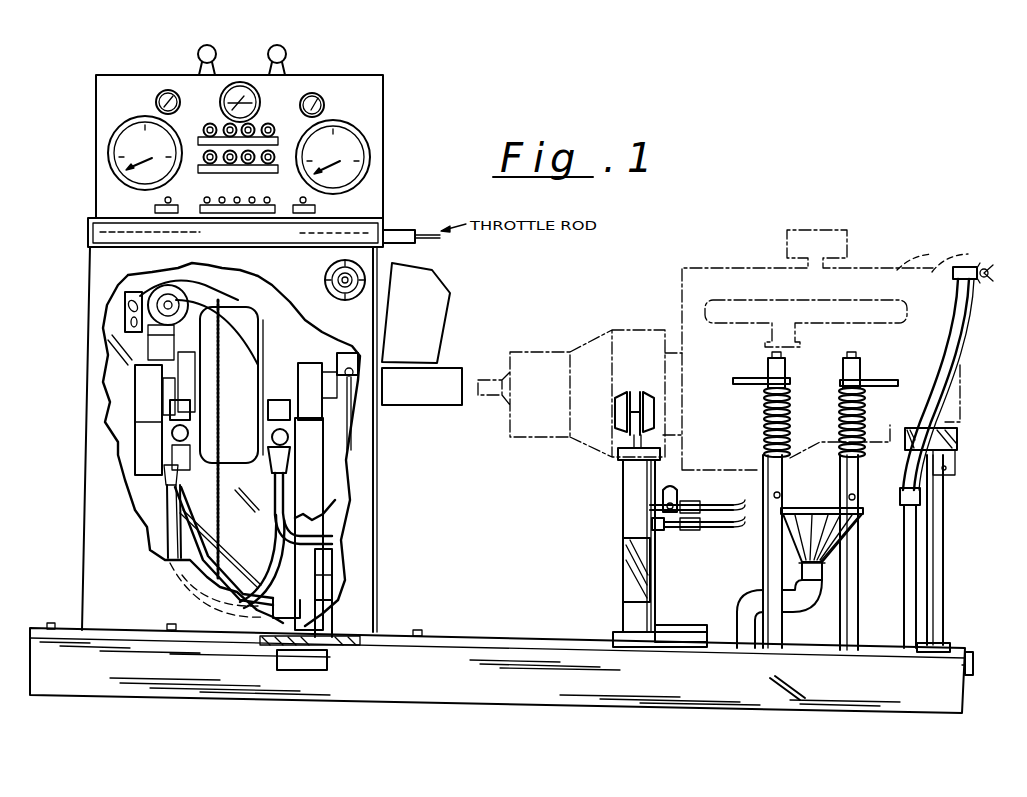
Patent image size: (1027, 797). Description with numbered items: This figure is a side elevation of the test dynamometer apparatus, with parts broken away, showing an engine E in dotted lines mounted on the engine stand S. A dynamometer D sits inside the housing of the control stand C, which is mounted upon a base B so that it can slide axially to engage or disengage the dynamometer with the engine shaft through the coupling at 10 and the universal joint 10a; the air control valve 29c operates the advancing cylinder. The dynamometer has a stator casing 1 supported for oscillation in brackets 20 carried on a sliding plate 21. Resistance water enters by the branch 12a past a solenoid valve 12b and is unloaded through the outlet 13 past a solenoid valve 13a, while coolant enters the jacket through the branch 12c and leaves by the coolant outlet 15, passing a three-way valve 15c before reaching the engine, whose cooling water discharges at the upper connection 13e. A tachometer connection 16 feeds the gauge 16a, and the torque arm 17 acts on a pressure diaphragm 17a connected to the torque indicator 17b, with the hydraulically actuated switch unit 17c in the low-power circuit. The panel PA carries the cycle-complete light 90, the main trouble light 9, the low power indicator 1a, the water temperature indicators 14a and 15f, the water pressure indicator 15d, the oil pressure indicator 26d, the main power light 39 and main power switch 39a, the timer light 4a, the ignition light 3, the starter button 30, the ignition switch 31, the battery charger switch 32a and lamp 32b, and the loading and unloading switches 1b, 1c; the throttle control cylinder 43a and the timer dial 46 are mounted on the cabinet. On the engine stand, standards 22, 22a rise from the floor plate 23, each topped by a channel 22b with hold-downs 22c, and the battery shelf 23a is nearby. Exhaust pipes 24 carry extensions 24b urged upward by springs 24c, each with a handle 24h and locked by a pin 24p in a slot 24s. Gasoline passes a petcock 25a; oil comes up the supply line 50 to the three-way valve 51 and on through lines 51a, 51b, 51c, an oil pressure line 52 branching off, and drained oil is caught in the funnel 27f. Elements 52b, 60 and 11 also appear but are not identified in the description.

The panel PA is at (100, 92).
The cycle-complete light 90 is at (203, 55).
The main trouble light 9 is at (285, 56).
The torque indicator 17b is at (108, 140).
The tachometer gauge 16a is at (370, 140).
The temperature indicator 15f is at (159, 96).
The water temperature indicator 14a is at (228, 124).
The gauge 52b is at (324, 104).
The low power indicator 1a is at (212, 124).
The water pressure indicator 15d is at (253, 125).
The oil pressure indicator 26d is at (274, 129).
The main power indicator light 39 is at (210, 160).
The timer light 4a is at (230, 163).
The ignition light 3 is at (248, 163).
The battery charger light 32b is at (270, 161).
The loading switch 1b is at (160, 203).
The unloading switch 1c is at (306, 203).
The main power switch 39a is at (207, 203).
The indicator light 60 is at (222, 203).
The starter button 30 is at (237, 203).
The ignition switch 31 is at (252, 203).
The battery charger switch 32a is at (267, 203).
The throttle control cylinder 43a is at (398, 229).
The dial 46 is at (326, 276).
The control valve 29c is at (388, 357).
The universal joint coupling 10a is at (403, 400).
The coupling 10 is at (353, 410).
The hydraulically actuated switch unit 17c is at (125, 297).
The pressure diaphragm 17a is at (177, 317).
The torque arm 17 is at (189, 308).
The stator casing 1 is at (220, 305).
The tachometer connection 16 is at (273, 313).
The dynamometer D is at (235, 393).
The brackets 20 is at (155, 466).
The solenoid controlled valve 12b is at (270, 410).
The solenoid controlled valve 13a is at (188, 433).
The branch 12a is at (334, 542).
The branch 12c is at (272, 551).
The outlet 13 is at (193, 551).
The coolant outlet 15 is at (168, 521).
The oil pressure line 52 is at (215, 518).
The plate 21 is at (350, 634).
The pipe fitting 11 is at (327, 665).
The control stand C is at (68, 383).
The base B is at (518, 700).
The channel 22b is at (615, 410).
The hold-downs 22c is at (640, 398).
The engine E is at (853, 272).
The exhaust connections 24 is at (845, 477).
The extensions 24b is at (764, 405).
The handle 24h is at (748, 378).
The springs 24c is at (838, 405).
The pin 24p is at (843, 495).
The slot 24s is at (772, 495).
The funnel 27f is at (840, 532).
The standard 22 is at (632, 498).
The oil supply line 50 is at (646, 552).
The floor plate 23 is at (596, 641).
The shelf 23a is at (670, 625).
The three-way valve 51 is at (675, 490).
The line 51a is at (733, 504).
The line 51b is at (660, 510).
The line 51c is at (722, 530).
The petcock 25a is at (675, 532).
The standard 22a is at (944, 492).
The upper connection 13e is at (967, 318).
The engine stand S is at (963, 568).
The three-way valve 15c is at (972, 677).